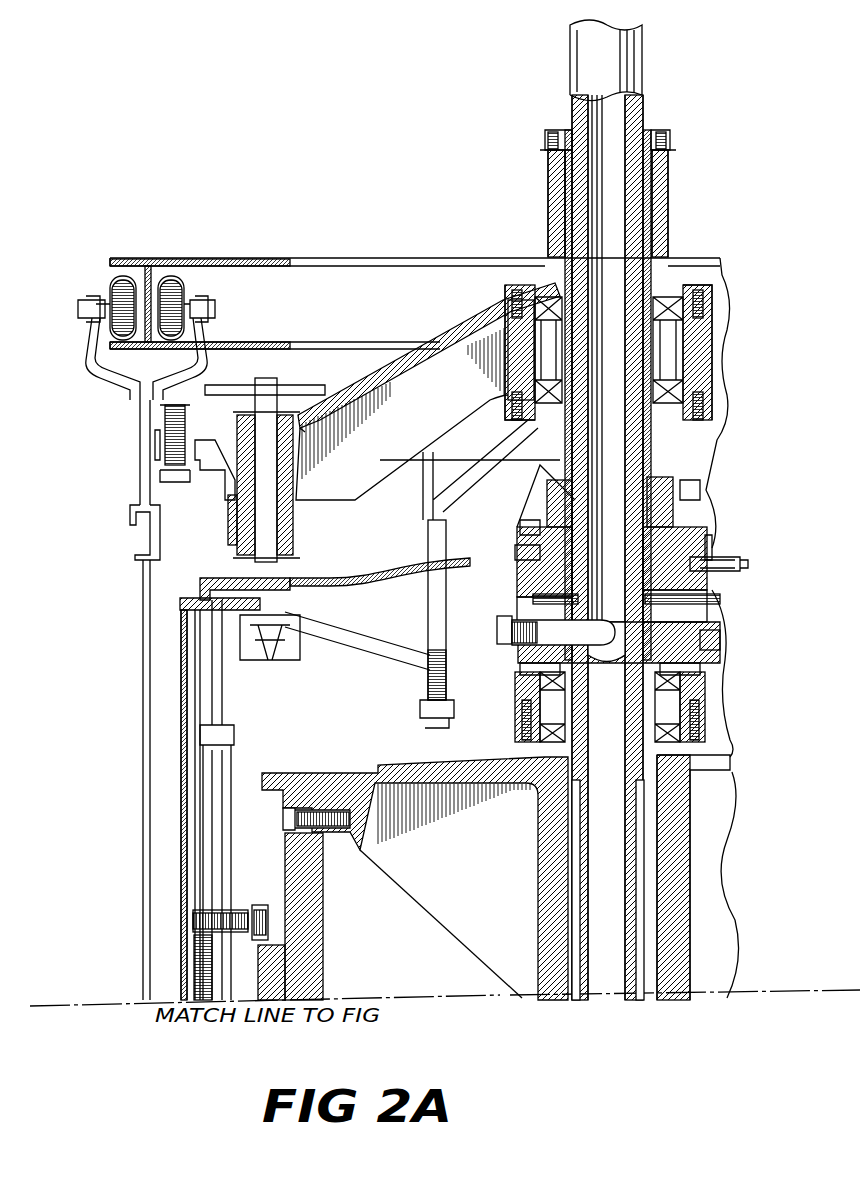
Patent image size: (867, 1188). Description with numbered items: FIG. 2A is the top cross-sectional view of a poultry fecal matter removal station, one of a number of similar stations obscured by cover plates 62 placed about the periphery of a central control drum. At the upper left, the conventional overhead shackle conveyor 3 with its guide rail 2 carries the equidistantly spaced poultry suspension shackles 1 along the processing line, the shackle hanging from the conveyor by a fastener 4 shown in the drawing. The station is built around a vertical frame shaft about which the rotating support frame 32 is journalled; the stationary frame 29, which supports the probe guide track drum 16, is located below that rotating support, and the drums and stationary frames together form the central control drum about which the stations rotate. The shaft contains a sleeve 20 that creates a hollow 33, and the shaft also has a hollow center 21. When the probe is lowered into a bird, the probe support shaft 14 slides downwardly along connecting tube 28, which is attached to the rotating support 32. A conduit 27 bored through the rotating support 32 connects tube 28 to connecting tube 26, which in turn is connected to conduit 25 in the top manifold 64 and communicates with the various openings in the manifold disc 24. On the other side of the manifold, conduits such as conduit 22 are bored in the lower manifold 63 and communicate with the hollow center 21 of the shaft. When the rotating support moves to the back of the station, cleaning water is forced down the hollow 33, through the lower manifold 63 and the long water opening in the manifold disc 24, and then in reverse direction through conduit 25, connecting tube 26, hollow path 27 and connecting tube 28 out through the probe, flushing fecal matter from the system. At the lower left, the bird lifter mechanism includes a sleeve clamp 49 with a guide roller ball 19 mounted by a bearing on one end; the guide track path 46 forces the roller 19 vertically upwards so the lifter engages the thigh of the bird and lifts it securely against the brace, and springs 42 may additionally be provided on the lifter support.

The poultry suspension shackle 1 is at (143, 682).
The guide rail 2 is at (128, 258).
The overhead shackle conveyor 3 is at (110, 286).
The bolt 4 is at (160, 470).
The probe support shaft 14 is at (230, 792).
The probe guide track drum 16 is at (325, 992).
The guide roller ball 19 is at (260, 905).
The sleeve 20 is at (642, 115).
The hollow center 21 is at (612, 212).
The conduit 22 is at (618, 570).
The manifold disc 24 is at (575, 601).
The conduit 25 is at (520, 556).
The connecting tube 26 is at (345, 590).
The conduit 27 is at (228, 588).
The connecting tube 28 is at (216, 662).
The stationary frame 29 is at (472, 918).
The rotating support frame 32 is at (436, 368).
The hollow 33 is at (640, 265).
The spring 42 is at (195, 988).
The guide track path 46 is at (310, 965).
The sleeve clamp 49 is at (234, 908).
The cover plate 62 is at (186, 870).
The lower manifold 63 is at (510, 616).
The top manifold 64 is at (515, 542).